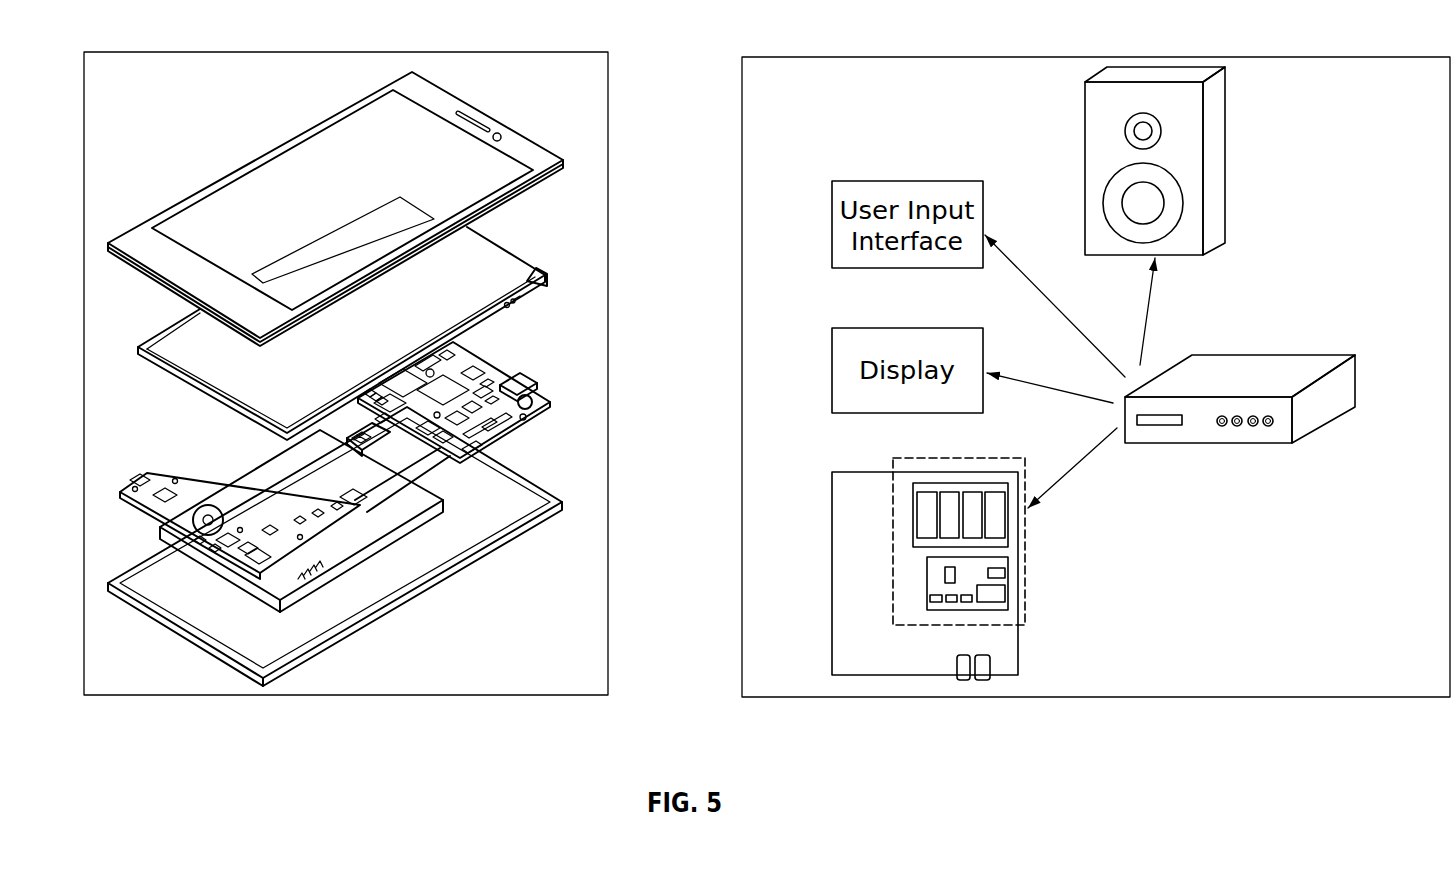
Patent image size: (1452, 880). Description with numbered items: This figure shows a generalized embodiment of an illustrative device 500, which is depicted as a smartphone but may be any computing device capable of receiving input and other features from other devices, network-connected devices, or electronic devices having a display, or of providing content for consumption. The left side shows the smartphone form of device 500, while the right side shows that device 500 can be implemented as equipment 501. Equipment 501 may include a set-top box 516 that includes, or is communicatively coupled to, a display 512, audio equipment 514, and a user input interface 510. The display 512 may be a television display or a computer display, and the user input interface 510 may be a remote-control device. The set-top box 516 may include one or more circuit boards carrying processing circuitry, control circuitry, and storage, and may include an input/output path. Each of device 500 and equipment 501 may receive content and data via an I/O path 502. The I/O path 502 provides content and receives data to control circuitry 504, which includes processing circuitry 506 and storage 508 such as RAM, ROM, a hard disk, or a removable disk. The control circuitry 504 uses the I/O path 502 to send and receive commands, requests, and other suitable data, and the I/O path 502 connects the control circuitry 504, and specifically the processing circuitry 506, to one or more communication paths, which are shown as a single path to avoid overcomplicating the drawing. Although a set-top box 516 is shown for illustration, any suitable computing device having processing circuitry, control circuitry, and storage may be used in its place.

The device 500 is at (180, 50).
The equipment 501 is at (1295, 54).
The I/O path 502 is at (192, 535).
The control circuitry 504 is at (888, 590).
The processing circuitry 506 is at (920, 565).
The storage 508 is at (910, 512).
The user input interface 510 is at (830, 222).
The display 512 is at (828, 335).
The audio equipment 514 is at (1080, 167).
The set-top box 516 is at (1233, 353).